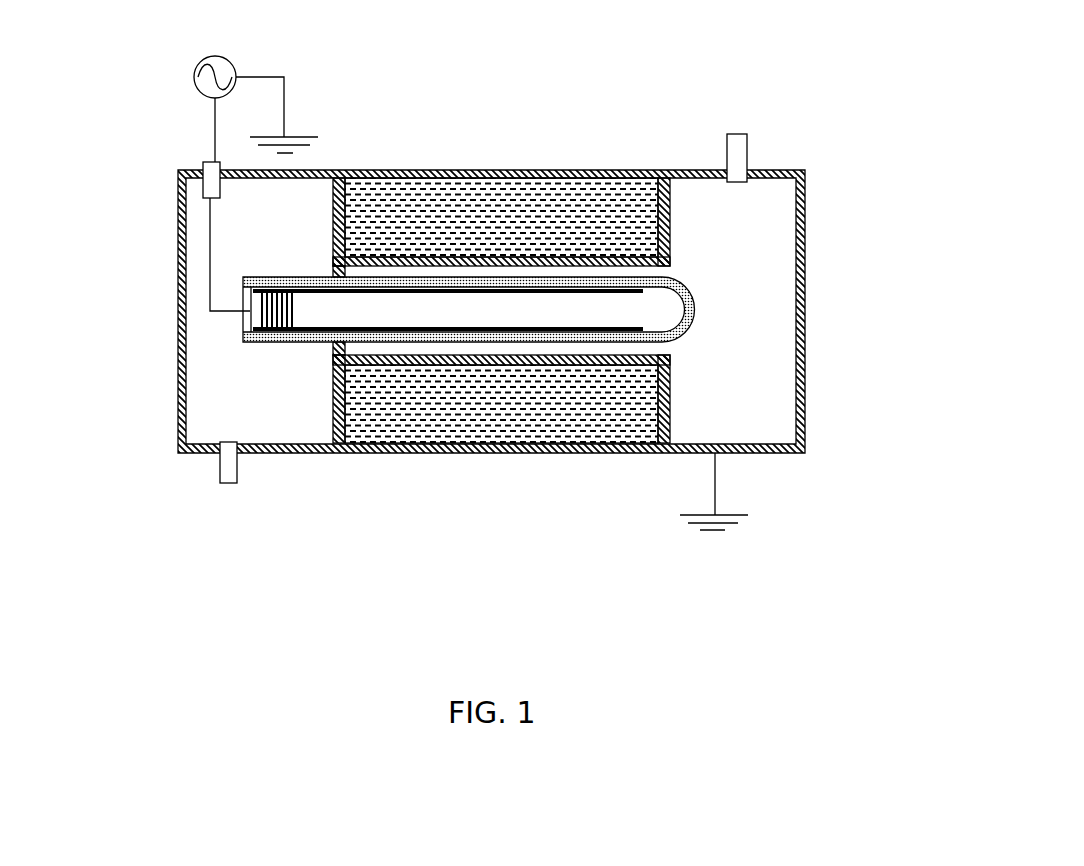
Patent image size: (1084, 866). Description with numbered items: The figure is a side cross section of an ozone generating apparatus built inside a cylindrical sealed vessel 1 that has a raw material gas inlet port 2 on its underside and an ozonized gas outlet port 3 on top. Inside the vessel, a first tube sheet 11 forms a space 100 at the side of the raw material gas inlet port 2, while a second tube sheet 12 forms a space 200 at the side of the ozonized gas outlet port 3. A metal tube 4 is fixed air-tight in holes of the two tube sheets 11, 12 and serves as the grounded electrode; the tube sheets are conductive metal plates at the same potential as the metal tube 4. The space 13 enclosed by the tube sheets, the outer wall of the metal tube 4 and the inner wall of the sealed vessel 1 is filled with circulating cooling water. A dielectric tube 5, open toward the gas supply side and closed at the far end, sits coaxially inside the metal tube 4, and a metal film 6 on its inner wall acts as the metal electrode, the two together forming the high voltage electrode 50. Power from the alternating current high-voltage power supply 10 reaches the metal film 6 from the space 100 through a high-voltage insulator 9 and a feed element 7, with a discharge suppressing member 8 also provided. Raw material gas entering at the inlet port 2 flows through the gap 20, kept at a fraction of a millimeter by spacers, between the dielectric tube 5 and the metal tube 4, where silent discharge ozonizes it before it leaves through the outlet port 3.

The sealed vessel 1 is at (425, 170).
The raw material gas inlet port 2 is at (215, 488).
The ozonized gas outlet port 3 is at (747, 138).
The metal tube 4 is at (541, 252).
The dielectric tube 5 is at (590, 342).
The metal film 6 is at (477, 325).
The feed element 7 is at (252, 338).
The discharge suppressing member 8 is at (335, 352).
The high-voltage insulator 9 is at (203, 170).
The alternating current high-voltage power supply 10 is at (197, 69).
The first tube sheet 11 is at (345, 168).
The second tube sheet 12 is at (670, 217).
The space 13 is at (472, 213).
The gap 20 is at (405, 357).
The high voltage electrode 50 is at (600, 550).
The space 100 is at (230, 385).
The space 200 is at (750, 300).